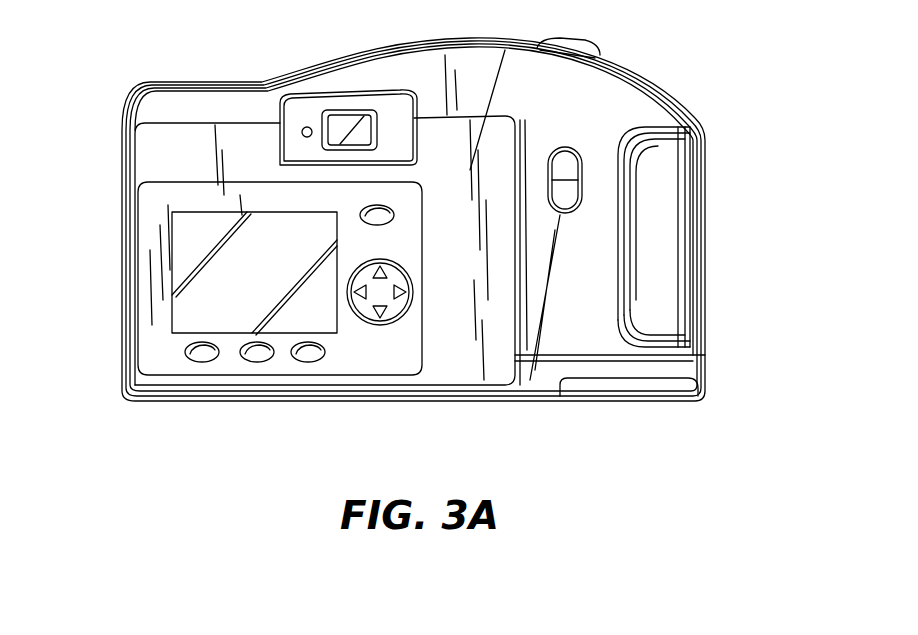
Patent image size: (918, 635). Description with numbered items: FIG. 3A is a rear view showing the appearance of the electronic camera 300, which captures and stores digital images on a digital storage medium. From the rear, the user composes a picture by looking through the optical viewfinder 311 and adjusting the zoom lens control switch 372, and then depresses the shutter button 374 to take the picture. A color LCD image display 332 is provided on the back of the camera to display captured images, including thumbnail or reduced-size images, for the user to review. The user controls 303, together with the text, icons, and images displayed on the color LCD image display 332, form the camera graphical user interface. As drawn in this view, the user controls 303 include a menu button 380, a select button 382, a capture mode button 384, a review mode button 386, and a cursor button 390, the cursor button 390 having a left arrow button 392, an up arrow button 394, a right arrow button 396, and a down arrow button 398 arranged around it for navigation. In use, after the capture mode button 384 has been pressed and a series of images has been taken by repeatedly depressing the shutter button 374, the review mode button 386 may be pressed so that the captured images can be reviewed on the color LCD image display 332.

The electronic camera 300 is at (710, 150).
The user controls 303 is at (350, 350).
The optical viewfinder 311 is at (343, 122).
The color LCD image display 332 is at (185, 250).
The zoom lens control switch 372 is at (563, 148).
The shutter button 374 is at (585, 42).
The menu button 380 is at (306, 362).
The select button 382 is at (365, 207).
The capture mode button 384 is at (250, 362).
The review mode button 386 is at (200, 362).
The cursor button 390 is at (394, 330).
The left arrow button 392 is at (362, 296).
The up arrow button 394 is at (385, 268).
The right arrow button 396 is at (402, 290).
The down arrow button 398 is at (388, 312).